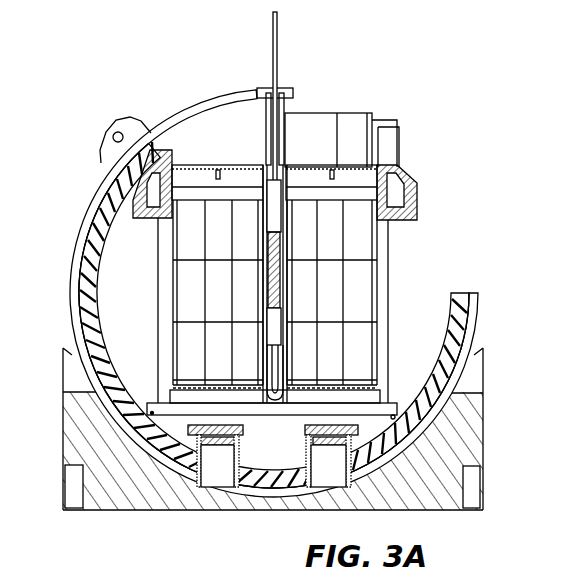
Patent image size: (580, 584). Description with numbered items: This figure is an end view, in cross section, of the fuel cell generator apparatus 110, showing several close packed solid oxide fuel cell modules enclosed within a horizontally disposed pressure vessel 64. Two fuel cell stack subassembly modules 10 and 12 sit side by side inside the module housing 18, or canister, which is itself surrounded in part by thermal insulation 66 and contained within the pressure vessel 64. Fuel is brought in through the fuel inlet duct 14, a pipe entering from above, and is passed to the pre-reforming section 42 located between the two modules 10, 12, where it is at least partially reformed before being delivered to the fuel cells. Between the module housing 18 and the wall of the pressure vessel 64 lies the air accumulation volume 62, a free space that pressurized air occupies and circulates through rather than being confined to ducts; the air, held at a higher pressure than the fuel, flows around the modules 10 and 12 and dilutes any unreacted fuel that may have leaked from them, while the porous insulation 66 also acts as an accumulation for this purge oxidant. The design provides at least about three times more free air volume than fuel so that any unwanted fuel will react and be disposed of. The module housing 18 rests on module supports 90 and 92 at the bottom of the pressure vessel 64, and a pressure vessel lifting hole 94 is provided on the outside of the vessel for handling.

The fuel cell subassembly module 10 is at (200, 163).
The fuel cell subassembly module 12 is at (310, 165).
The fuel inlet duct 14 is at (277, 63).
The module housing 18 is at (397, 257).
The pre-reforming section 42 is at (279, 349).
The air accumulation volume 62 is at (237, 143).
The pressure vessel 64 is at (75, 208).
The thermal insulation 66 is at (94, 327).
The module support 90 is at (229, 470).
The module support 92 is at (484, 428).
The pressure vessel lifting hole 94 is at (118, 132).
The fuel cell generator apparatus 110 is at (456, 96).